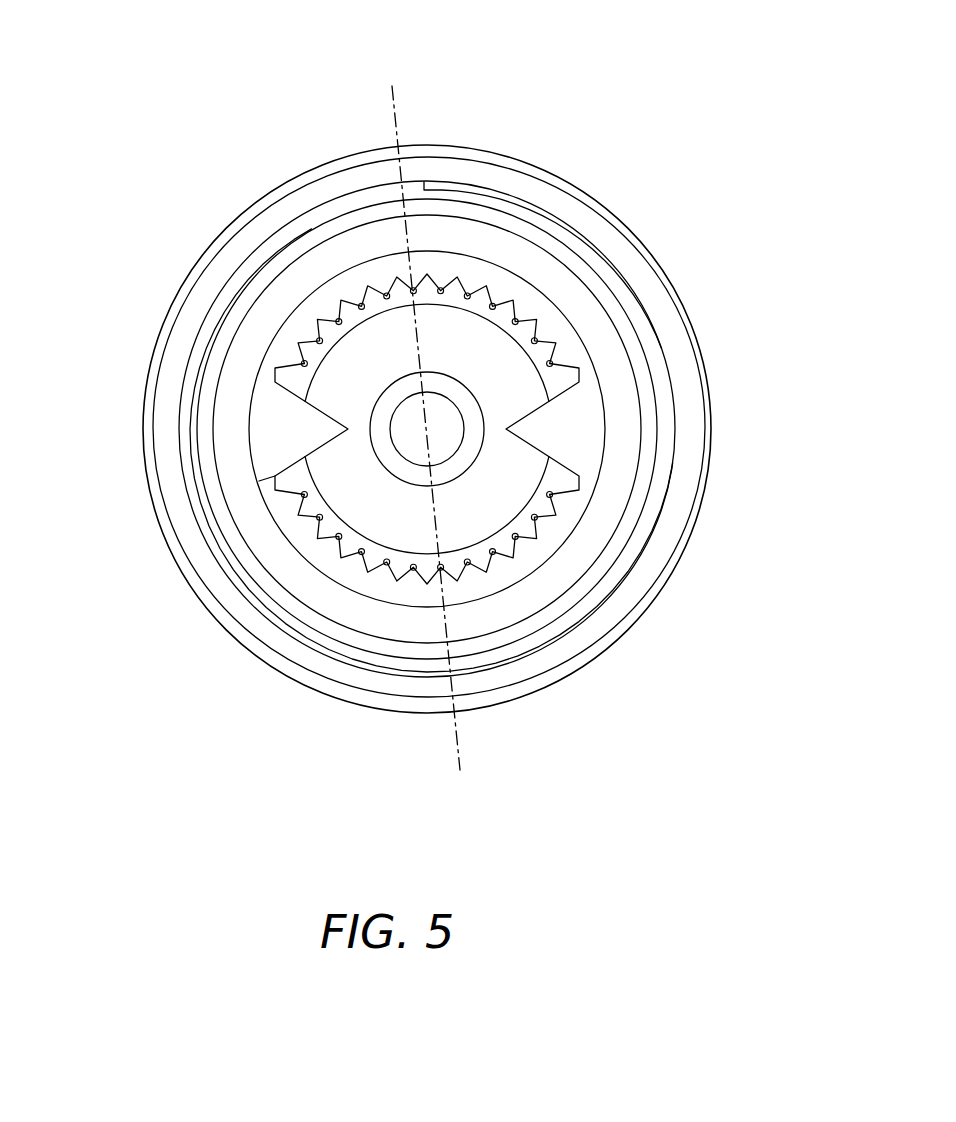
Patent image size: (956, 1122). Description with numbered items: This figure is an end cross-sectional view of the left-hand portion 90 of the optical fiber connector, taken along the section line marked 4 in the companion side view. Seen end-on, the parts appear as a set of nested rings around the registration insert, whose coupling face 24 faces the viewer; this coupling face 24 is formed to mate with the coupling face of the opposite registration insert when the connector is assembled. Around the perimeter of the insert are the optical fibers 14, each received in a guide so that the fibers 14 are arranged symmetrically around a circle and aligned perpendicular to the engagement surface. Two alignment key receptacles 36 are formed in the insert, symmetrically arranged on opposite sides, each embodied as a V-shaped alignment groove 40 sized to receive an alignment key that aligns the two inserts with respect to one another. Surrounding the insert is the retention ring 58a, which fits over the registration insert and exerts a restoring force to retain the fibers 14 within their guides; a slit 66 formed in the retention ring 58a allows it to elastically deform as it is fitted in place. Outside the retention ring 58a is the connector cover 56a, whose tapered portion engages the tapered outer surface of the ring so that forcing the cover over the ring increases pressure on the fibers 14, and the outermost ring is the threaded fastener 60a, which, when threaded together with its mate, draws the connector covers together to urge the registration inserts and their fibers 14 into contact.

The left-hand portion 90 is at (670, 76).
The threaded fastener 60a is at (640, 241).
The connector cover 56a is at (618, 365).
The retention ring 58a is at (597, 421).
The slit 66 is at (268, 473).
The coupling face 24 is at (357, 500).
The optical fibers 14 is at (320, 312).
The alignment key receptacle 36 is at (298, 414).
The alignment groove 40 is at (276, 431).
The section line 4- 4 is at (392, 86).